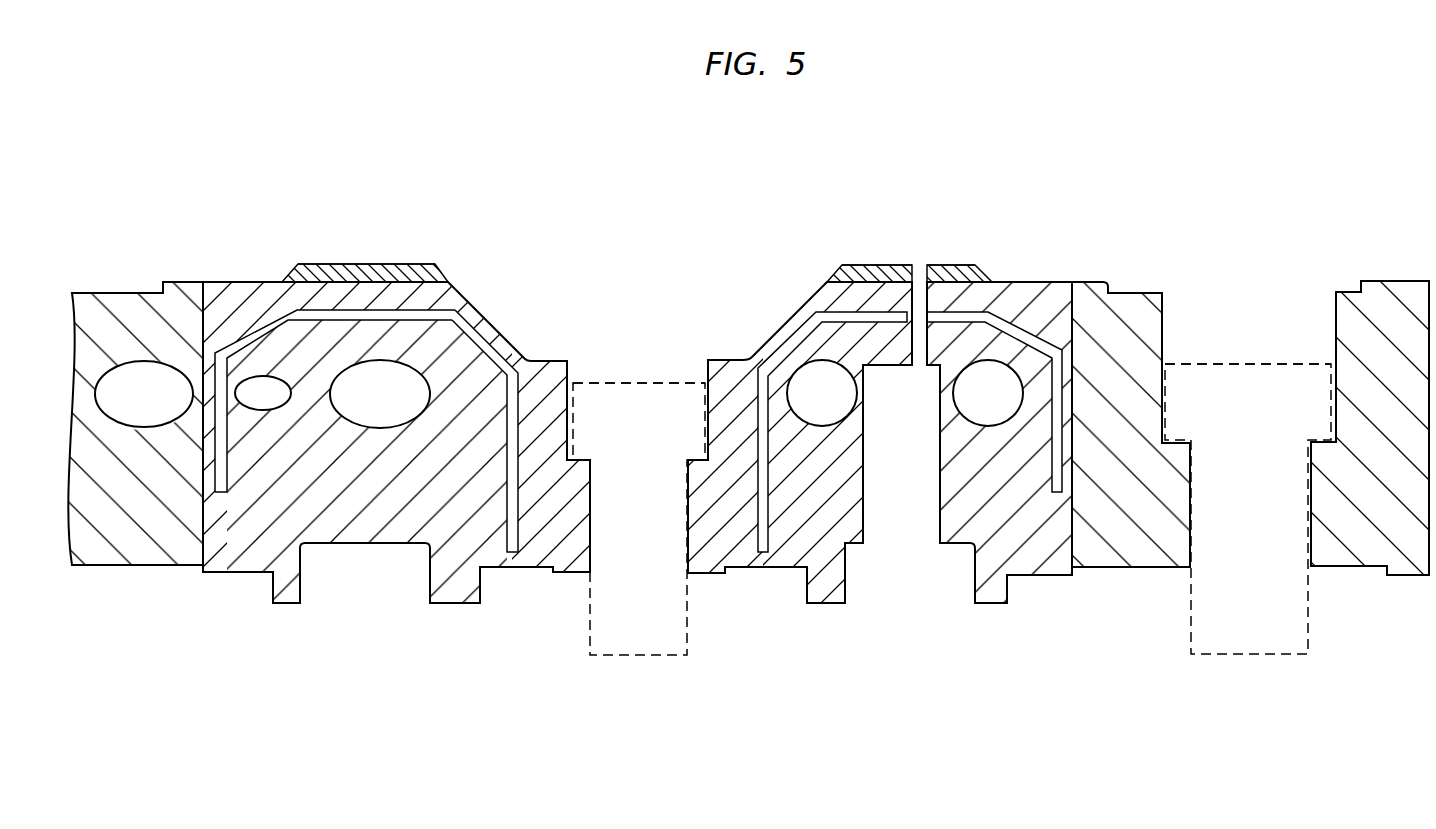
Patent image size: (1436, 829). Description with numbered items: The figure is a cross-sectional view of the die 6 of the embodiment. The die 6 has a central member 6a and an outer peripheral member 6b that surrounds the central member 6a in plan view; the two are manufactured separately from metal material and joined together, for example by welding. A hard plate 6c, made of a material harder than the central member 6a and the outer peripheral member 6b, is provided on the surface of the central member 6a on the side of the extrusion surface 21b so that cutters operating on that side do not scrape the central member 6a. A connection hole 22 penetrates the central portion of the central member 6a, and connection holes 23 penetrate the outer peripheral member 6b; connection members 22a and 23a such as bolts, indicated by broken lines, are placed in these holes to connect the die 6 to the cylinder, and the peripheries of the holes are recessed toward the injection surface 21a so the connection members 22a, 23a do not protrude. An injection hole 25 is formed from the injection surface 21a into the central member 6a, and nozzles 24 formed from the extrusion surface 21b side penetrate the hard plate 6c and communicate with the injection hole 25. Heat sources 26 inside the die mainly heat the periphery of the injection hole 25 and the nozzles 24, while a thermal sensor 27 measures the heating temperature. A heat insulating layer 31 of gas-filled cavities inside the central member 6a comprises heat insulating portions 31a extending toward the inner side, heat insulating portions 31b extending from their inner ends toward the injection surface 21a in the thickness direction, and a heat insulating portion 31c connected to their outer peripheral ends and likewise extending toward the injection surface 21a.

The die 6 is at (1385, 164).
The central member 6a is at (240, 297).
The outer peripheral member 6b is at (115, 310).
The hard plate 6c is at (420, 266).
The injection surface 21a is at (1348, 582).
The extrusion surface 21b is at (1097, 270).
The connection hole 22 is at (590, 513).
The connection member 22a is at (640, 383).
The connection hole 23 is at (1191, 503).
The connection member 23a is at (1251, 364).
The nozzle 24 is at (918, 282).
The injection hole 25 is at (900, 437).
The heat source 26 is at (143, 405).
The thermal sensor 27 is at (267, 405).
The heat insulating layer 31 is at (649, 415).
The heat insulating portion 31a is at (347, 310).
The heat insulating portion 31b is at (505, 473).
The heat insulating portion 31c is at (217, 465).